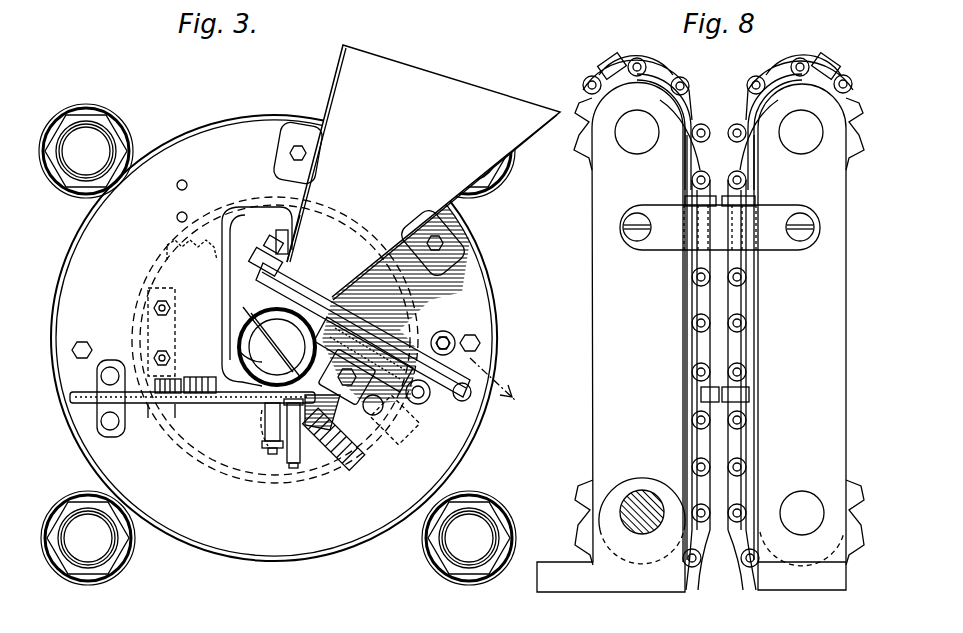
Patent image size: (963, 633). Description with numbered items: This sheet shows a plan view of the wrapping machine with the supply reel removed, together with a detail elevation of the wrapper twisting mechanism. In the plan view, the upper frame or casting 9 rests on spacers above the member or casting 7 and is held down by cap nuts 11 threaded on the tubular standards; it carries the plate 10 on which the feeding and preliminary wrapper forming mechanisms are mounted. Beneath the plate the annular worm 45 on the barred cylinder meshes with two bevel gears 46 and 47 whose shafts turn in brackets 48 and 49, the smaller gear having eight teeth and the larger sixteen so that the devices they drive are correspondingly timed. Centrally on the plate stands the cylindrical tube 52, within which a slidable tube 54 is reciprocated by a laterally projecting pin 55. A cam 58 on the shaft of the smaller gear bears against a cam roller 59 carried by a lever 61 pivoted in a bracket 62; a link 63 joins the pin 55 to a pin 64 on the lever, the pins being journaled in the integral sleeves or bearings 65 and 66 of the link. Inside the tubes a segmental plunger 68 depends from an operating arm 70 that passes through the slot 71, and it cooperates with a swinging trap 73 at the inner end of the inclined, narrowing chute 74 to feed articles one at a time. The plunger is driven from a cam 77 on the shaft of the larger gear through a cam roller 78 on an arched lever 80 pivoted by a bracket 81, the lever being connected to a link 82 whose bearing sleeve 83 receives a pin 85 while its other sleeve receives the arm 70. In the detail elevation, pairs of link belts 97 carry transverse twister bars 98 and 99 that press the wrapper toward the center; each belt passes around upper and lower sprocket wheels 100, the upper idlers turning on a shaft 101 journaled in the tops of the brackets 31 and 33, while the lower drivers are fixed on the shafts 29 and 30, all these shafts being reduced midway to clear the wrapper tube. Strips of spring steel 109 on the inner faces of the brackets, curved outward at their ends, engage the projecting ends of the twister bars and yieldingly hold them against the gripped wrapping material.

In FIG. 3, the member or casting 7 is at (497, 386).
In FIG. 3, the upper frame or casting 9 is at (78, 200).
In FIG. 8, the upper frame or casting 9 is at (684, 199).
In FIG. 3, the plate 10 is at (264, 338).
In FIG. 8, the plate 10 is at (700, 389).
In FIG. 3, the cap nuts 11 is at (104, 143).
In FIG. 8, the shaft 29 is at (796, 492).
In FIG. 8, the shaft 30 is at (655, 478).
In FIG. 8, the bracket 31 is at (826, 598).
In FIG. 8, the bracket 33 is at (656, 598).
In FIG. 3, the annular worm 45 is at (203, 479).
In FIG. 3, the bevel gear 46 is at (176, 250).
In FIG. 3, the bevel gear 47 is at (343, 470).
In FIG. 3, the bracket 48 is at (146, 318).
In FIG. 3, the bracket 49 is at (385, 452).
In FIG. 3, the cylindrical tube 52 is at (240, 340).
In FIG. 3, the slidable tube 54 is at (238, 330).
In FIG. 3, the pin 55 is at (290, 450).
In FIG. 3, the cam 58 is at (168, 405).
In FIG. 3, the cam roller 59 is at (200, 396).
In FIG. 3, the lever 61 is at (236, 402).
In FIG. 3, the bracket 62 is at (97, 385).
In FIG. 3, the link 63 is at (266, 424).
In FIG. 3, the pin 64 is at (294, 470).
In FIG. 3, the cylindrical sleeve or bearing 65 is at (268, 450).
In FIG. 3, the cylindrical sleeve or bearing 66 is at (280, 448).
In FIG. 3, the plunger 68 is at (242, 352).
In FIG. 3, the operating arm 70 is at (245, 300).
In FIG. 3, the slot 71 is at (240, 320).
In FIG. 3, the swinging trap 73 is at (277, 346).
In FIG. 3, the chute 74 is at (452, 92).
In FIG. 3, the cam 77 is at (410, 345).
In FIG. 3, the cam roller 78 is at (390, 340).
In FIG. 3, the lever 80 is at (450, 388).
In FIG. 3, the bracket 81 is at (450, 348).
In FIG. 3, the link 82 is at (278, 258).
In FIG. 3, the cylindrical bearing sleeve 83 is at (284, 236).
In FIG. 3, the pin 85 is at (296, 228).
In FIG. 8, the link belts 97 is at (702, 96).
In FIG. 8, the twister bar 98 is at (690, 182).
In FIG. 8, the twister bar 99 is at (610, 60).
In FIG. 8, the sprocket wheels 100 is at (586, 170).
In FIG. 8, the shaft 101 is at (632, 116).
In FIG. 8, the yielding facings or strips of spring steel 109 is at (696, 304).